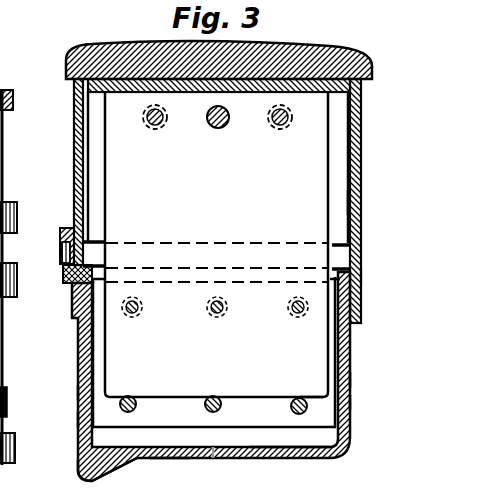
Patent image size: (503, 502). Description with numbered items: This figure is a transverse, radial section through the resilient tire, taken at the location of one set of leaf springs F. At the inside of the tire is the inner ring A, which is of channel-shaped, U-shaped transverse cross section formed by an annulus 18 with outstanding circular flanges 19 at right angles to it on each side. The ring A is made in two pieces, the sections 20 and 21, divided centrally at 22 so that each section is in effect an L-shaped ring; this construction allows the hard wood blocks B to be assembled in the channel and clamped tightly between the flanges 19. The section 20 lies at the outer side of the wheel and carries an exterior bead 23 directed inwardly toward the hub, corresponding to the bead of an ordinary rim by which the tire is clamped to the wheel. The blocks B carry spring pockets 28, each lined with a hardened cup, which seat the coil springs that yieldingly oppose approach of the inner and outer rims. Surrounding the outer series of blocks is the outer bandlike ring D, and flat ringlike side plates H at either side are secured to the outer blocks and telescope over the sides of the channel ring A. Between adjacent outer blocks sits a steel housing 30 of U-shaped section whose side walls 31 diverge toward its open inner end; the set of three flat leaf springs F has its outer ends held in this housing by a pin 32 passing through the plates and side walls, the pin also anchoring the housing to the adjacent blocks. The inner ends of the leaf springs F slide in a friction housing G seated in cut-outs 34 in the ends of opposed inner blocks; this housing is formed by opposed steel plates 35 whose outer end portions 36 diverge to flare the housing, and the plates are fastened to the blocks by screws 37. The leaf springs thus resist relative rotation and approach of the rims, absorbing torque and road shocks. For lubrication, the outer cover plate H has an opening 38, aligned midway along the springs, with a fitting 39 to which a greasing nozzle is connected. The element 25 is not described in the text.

The outer bandlike ring D is at (128, 63).
The side plate H is at (5, 150).
The housing 30 is at (363, 93).
The pin 32 is at (207, 118).
The leaf spring F is at (313, 170).
The side wall 31 is at (338, 202).
The fitting 39 is at (62, 253).
The opening 38 is at (62, 260).
The spring pocket 28 is at (7, 250).
The outer end portion 36 is at (362, 277).
The cut out 34 is at (303, 285).
The screw 37 is at (308, 307).
The section 21 is at (350, 380).
The inner ring A is at (352, 352).
The bracket 25 is at (3, 380).
The flange 19 is at (85, 420).
The section 20 is at (85, 392).
The bead 23 is at (90, 470).
The steel plate 35 is at (138, 458).
The annulus 18 is at (167, 458).
The division 22 is at (215, 460).
The hard wood block B is at (288, 438).
The friction housing G is at (315, 413).